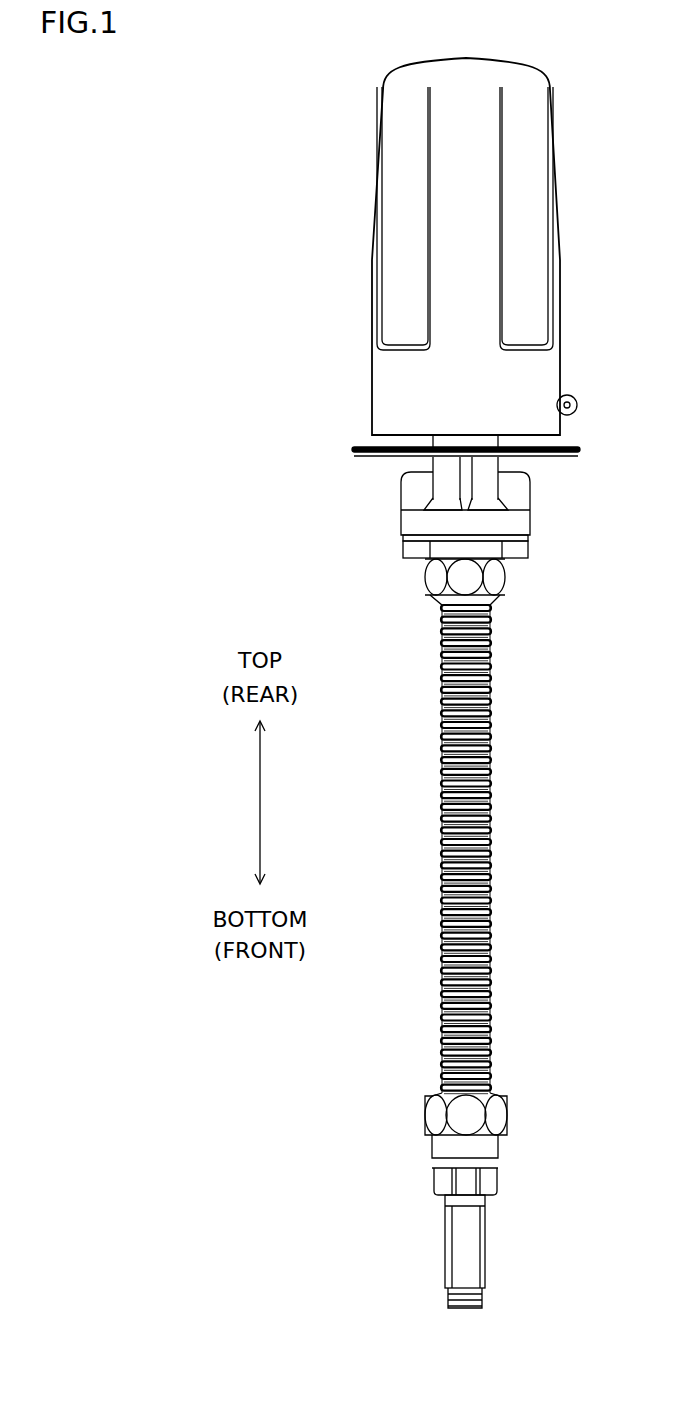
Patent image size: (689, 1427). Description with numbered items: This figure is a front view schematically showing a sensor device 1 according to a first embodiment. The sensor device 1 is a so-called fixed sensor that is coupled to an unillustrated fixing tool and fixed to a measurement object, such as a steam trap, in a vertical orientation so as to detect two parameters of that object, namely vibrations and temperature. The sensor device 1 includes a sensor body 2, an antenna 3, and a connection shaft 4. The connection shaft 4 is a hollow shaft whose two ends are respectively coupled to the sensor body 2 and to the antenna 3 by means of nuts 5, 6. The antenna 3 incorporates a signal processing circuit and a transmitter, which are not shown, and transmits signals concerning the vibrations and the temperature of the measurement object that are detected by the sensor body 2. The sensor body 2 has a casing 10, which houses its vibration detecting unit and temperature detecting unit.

The sensor device 1 is at (303, 115).
The sensor body 2 is at (501, 1148).
The antenna 3 is at (558, 242).
The connection shaft 4 is at (492, 713).
The nut 5 is at (506, 1100).
The nut 6 is at (508, 575).
The casing 10 is at (500, 1183).